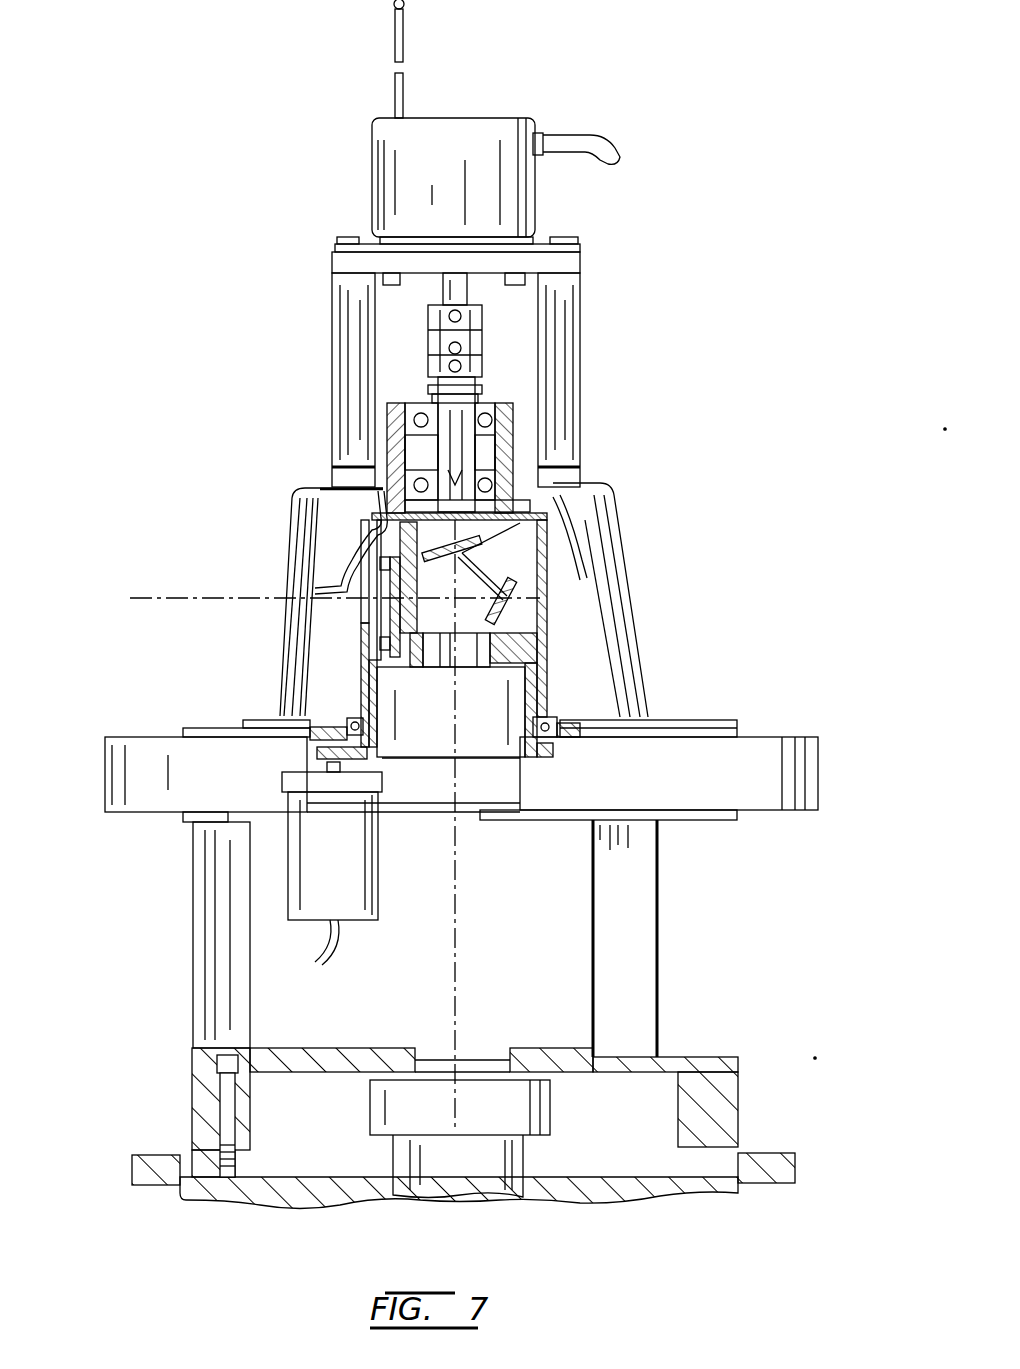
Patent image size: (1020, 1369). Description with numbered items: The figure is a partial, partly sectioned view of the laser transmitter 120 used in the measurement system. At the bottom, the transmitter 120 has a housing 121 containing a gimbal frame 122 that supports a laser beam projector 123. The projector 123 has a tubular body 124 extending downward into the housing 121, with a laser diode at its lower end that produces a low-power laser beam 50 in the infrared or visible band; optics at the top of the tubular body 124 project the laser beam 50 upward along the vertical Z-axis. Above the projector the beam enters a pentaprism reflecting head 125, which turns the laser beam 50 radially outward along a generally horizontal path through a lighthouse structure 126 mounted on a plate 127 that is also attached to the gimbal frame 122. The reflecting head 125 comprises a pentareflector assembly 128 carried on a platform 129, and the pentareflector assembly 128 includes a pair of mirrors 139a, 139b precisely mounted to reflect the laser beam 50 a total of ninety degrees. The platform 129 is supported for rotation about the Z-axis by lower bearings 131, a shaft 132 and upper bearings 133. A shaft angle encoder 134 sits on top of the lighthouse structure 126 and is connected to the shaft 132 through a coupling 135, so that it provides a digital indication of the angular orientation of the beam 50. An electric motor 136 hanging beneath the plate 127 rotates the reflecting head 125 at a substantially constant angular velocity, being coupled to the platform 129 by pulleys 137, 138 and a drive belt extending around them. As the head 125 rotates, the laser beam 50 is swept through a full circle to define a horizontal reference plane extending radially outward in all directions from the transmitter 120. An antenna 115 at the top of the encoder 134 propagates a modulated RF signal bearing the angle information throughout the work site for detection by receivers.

The antenna 115 is at (403, 38).
The shaft angle encoder 134 is at (372, 162).
The transmitter 120 is at (218, 291).
The coupling 135 is at (483, 335).
The bearings 133 is at (390, 460).
The shaft 132 is at (465, 490).
The pentaprism reflecting head 125 is at (547, 600).
The pentareflector assembly 128 is at (413, 572).
The mirror 139a is at (520, 512).
The mirror 139b is at (515, 610).
The platform 129 is at (540, 690).
The Z-axis Z is at (458, 712).
The laser beam 50 is at (200, 598).
The bearings 131 is at (353, 720).
The pulley 137 is at (313, 723).
The pulley 138 is at (547, 760).
The plate 127 is at (753, 742).
The lighthouse structure 126 is at (630, 610).
The electric motor 136 is at (300, 887).
The housing 121 is at (190, 1105).
The gimbal frame 122 is at (730, 1197).
The laser beam projector 123 is at (530, 1110).
The tubular body 124 is at (465, 1195).